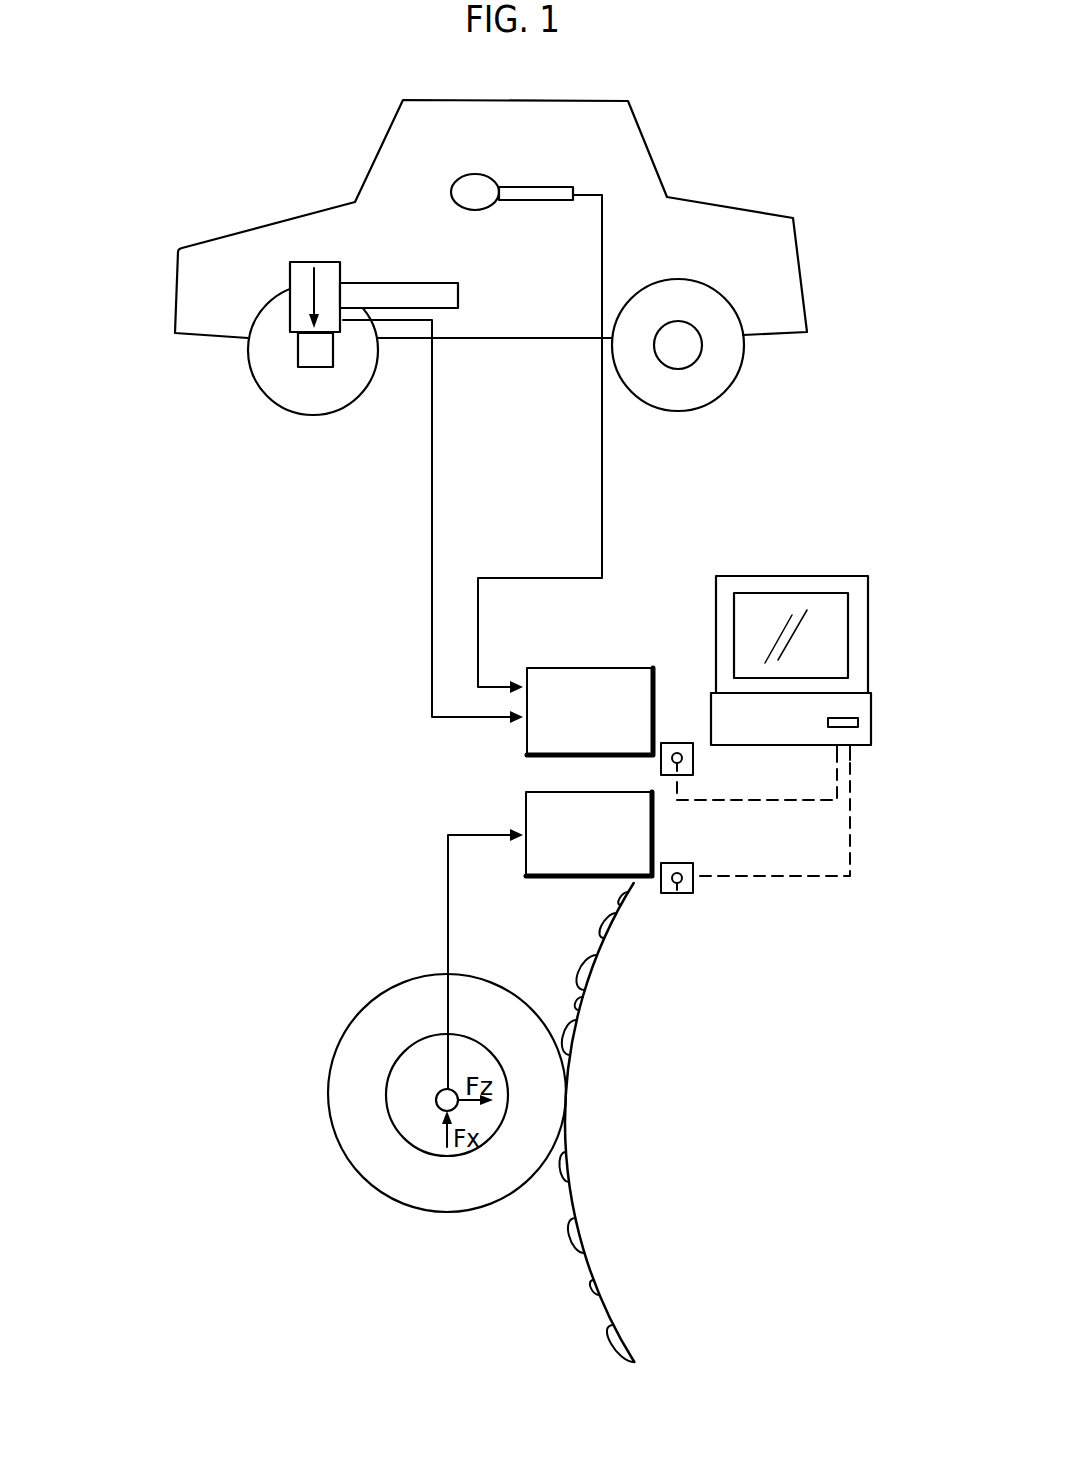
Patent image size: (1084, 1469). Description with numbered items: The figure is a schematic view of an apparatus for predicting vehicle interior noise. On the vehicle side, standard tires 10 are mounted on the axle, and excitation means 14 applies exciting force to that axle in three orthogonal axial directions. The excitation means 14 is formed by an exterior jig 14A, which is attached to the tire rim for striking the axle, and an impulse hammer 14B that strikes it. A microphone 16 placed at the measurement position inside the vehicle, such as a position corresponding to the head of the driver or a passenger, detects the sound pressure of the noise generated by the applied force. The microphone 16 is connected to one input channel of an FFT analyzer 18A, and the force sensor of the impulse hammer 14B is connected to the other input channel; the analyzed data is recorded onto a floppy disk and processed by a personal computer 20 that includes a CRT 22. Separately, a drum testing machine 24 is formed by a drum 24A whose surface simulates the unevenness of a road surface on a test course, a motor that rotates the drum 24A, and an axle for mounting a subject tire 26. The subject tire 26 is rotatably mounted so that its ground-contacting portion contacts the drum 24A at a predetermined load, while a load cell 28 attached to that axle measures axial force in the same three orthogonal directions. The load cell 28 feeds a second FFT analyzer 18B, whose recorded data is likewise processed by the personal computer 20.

The standard tires 10 is at (302, 402).
The excitation means 14 is at (328, 335).
The exterior jig 14A is at (322, 367).
The impulse hammer 14B is at (330, 275).
The microphone 16 is at (472, 205).
The FFT analyzer 18A is at (527, 737).
The FFT analyzer 18B is at (526, 803).
The personal computer 20 is at (763, 686).
The CRT 22 is at (743, 612).
The drum testing machine 24 is at (543, 1122).
The drum 24A is at (617, 1297).
The subject tire 26 is at (362, 1153).
The load cell 28 is at (437, 1095).